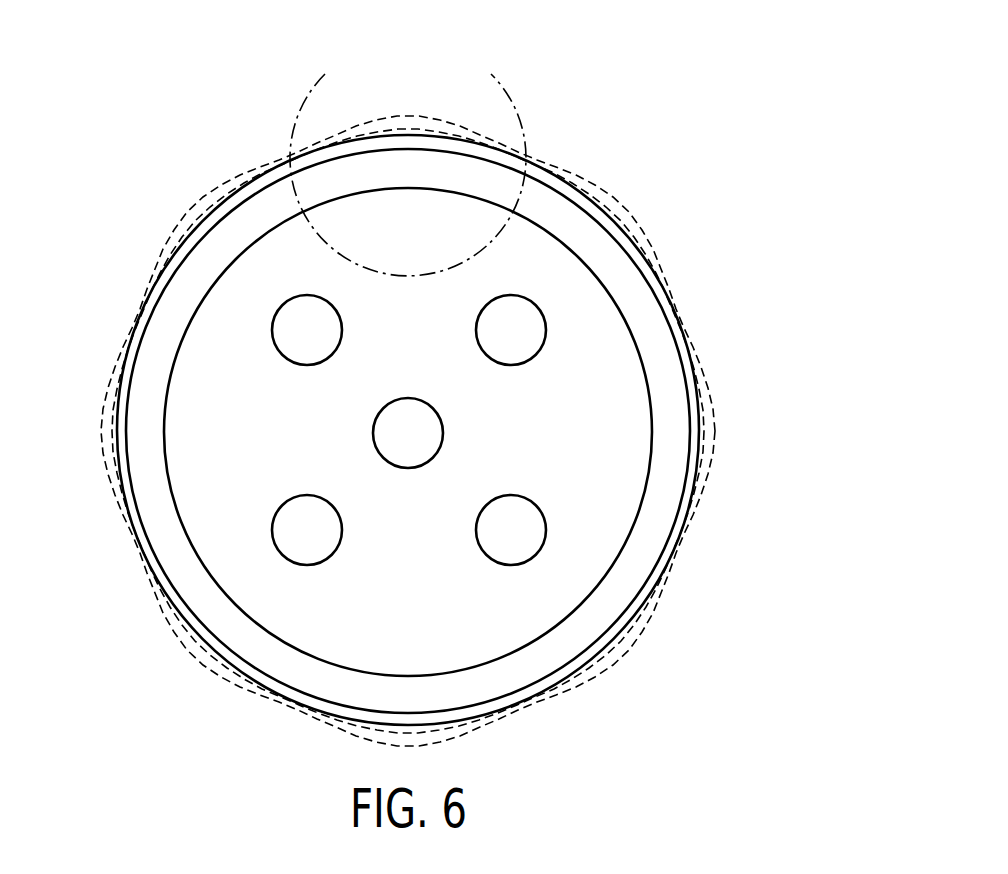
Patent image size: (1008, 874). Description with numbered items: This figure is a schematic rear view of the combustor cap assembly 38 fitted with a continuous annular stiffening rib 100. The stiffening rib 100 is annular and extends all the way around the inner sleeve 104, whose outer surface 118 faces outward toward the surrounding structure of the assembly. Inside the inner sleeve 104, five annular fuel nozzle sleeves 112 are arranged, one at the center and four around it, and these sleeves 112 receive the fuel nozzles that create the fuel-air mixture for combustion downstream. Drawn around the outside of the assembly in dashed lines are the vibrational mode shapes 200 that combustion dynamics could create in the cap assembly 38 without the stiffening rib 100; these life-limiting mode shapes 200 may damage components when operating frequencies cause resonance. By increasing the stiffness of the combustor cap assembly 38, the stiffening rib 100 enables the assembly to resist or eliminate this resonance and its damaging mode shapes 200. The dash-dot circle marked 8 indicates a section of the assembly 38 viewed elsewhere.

The combustor cap assembly 38 is at (140, 166).
The section line of FIG. 8 is at (327, 72).
The vibrational mode shapes 200 is at (573, 167).
The stiffening rib 100 is at (630, 287).
The inner sleeve 104 is at (678, 535).
The outer surface 118 is at (603, 400).
The fuel nozzle sleeves 112 is at (495, 335).